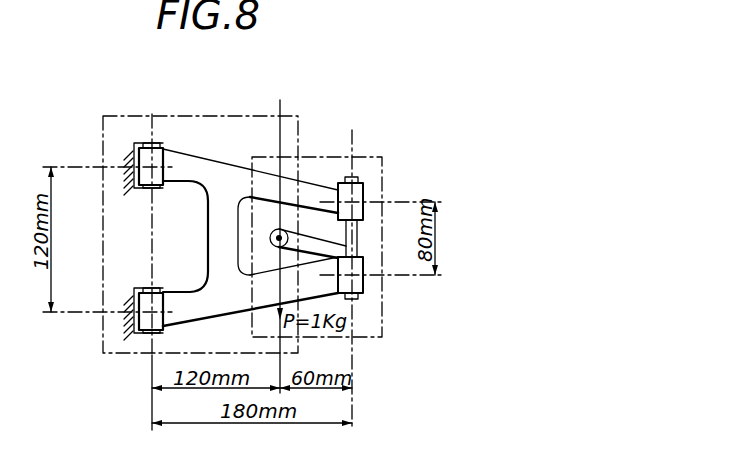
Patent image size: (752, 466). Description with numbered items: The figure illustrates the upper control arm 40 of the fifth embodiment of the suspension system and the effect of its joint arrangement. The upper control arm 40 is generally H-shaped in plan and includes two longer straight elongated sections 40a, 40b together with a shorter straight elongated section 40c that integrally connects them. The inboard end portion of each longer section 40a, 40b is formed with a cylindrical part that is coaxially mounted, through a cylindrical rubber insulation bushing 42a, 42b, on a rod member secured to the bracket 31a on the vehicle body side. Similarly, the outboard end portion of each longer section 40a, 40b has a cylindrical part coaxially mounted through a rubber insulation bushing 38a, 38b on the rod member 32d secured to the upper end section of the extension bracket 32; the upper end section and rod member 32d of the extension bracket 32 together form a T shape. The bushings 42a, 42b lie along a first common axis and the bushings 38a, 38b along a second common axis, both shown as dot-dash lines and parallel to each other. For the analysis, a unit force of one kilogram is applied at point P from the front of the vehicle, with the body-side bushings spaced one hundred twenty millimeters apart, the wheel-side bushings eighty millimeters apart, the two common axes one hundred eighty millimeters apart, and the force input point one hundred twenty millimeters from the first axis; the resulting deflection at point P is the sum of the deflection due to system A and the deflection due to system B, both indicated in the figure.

The bracket 31a is at (131, 157).
The system B is at (201, 116).
The system A is at (317, 269).
The upper control arm 40 is at (244, 214).
The longer straight elongated section 40a is at (267, 190).
The longer straight elongated section 40b is at (221, 306).
The shorter straight elongated section 40c is at (216, 218).
The rubber insulation bushing 42a is at (163, 148).
The rubber insulation bushing 42b is at (167, 293).
The rubber insulation bushing 38a is at (365, 186).
The rubber insulation bushing 38b is at (363, 283).
The extension bracket 32 is at (320, 267).
The rod member 32d is at (357, 240).